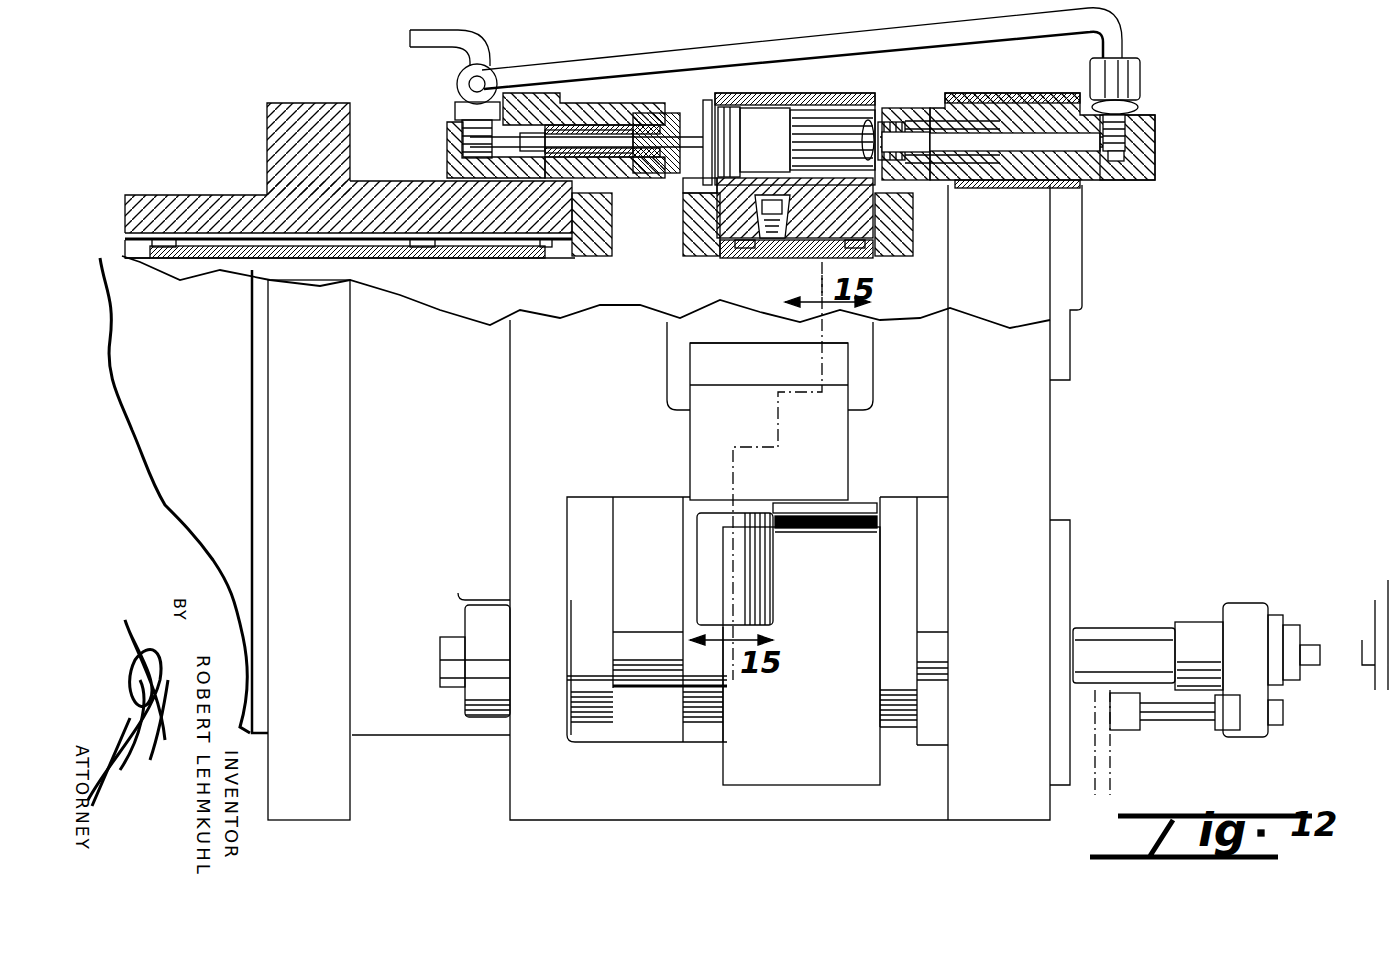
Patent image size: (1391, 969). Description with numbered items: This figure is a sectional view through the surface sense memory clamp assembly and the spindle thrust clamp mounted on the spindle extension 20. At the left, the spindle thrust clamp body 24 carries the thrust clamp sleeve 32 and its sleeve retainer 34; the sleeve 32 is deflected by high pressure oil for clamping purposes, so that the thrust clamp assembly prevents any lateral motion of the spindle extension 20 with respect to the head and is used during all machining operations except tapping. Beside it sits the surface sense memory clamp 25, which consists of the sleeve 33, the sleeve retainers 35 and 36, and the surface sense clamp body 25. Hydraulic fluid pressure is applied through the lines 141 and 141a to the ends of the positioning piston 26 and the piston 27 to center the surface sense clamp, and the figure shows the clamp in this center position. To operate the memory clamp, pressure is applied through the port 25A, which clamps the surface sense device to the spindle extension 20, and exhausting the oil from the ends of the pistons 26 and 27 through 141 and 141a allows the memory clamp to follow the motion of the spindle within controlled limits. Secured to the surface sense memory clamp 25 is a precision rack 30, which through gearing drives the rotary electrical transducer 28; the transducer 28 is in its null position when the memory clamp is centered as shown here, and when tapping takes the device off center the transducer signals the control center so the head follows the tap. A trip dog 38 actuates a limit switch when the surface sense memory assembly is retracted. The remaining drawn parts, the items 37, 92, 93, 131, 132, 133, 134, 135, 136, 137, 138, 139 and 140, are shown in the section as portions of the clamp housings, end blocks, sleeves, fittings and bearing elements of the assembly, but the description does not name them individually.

The spindle extension 20 is at (108, 262).
The spindle thrust clamp body 24 is at (305, 110).
The surface sense memory clamp 25 is at (735, 96).
The port 25A is at (795, 196).
The positioning piston 26 is at (1005, 130).
The piston 27 is at (692, 208).
The rotary electrical transducer 28 is at (700, 536).
The precision rack 30 is at (826, 532).
The thrust clamp sleeve 32 is at (295, 262).
The sleeve 33 is at (790, 258).
The sleeve retainer 34 is at (612, 240).
The sleeve retainer 35 is at (685, 217).
The sleeve retainer 36 is at (913, 235).
The shaft 37 is at (1126, 632).
The trip dog 38 is at (1243, 606).
The body 92 is at (690, 418).
The cap 93 is at (690, 344).
The end block 131 is at (1160, 140).
The end block 132 is at (452, 140).
The housing 133 is at (598, 103).
The nut 134 is at (660, 113).
The plate 135 is at (708, 100).
The cylinder 136 is at (772, 116).
The bearing block 137 is at (940, 116).
The washer 138 is at (858, 118).
The roller 139 is at (170, 258).
The sleeve 140 is at (560, 128).
The hydraulic fluid line 141 is at (1122, 32).
The hydraulic fluid line 141a is at (408, 38).